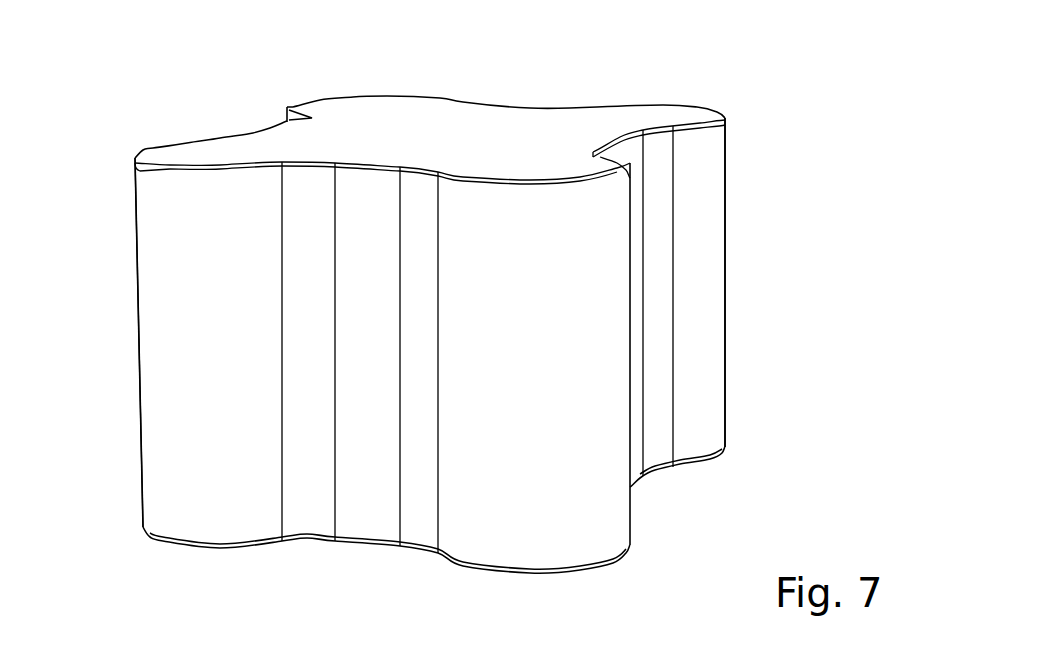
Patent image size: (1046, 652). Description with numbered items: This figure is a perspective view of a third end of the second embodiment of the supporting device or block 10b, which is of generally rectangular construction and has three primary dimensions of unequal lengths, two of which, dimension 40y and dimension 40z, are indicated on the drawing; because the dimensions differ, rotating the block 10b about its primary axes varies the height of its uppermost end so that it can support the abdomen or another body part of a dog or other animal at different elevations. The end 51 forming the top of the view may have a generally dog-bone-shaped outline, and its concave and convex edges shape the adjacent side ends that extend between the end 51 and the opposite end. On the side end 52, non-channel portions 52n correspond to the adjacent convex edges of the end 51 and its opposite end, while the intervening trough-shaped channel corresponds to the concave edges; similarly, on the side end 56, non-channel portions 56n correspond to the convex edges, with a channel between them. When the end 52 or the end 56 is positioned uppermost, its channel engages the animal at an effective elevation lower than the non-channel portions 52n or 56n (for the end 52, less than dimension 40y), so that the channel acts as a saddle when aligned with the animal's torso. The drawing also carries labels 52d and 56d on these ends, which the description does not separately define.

The block 10b is at (332, 132).
The end B1 51 is at (269, 145).
The depression between lobes 56d is at (372, 187).
The non-channel portions 56n is at (180, 188).
The recess inner surface 52d is at (633, 173).
The non-channel portions 52n is at (717, 232).
The end B2 52 is at (817, 272).
The dimension BZ 40z is at (92, 537).
The dimension BY 40y is at (625, 608).
The end B6 56 is at (120, 548).